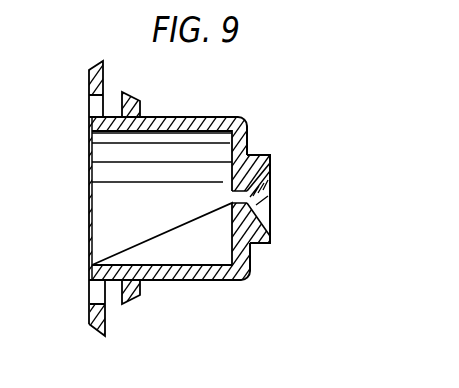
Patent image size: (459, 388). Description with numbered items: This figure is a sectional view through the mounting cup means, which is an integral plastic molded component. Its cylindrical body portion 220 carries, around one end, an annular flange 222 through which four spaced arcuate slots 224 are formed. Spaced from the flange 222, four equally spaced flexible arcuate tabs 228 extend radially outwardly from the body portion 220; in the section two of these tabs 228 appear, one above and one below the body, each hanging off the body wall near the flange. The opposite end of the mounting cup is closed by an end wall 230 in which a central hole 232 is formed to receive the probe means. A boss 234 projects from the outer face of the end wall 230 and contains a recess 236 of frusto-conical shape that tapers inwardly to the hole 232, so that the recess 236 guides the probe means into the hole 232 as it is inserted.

The cylindrical body portion 220 is at (203, 117).
The annular flange 222 is at (90, 327).
The arcuate slots 224 is at (98, 103).
The flexible arcuate tabs 228 is at (122, 93).
The end wall 230 is at (253, 264).
The central hole 232 is at (233, 200).
The boss 234 is at (258, 155).
The recess 236 is at (265, 185).